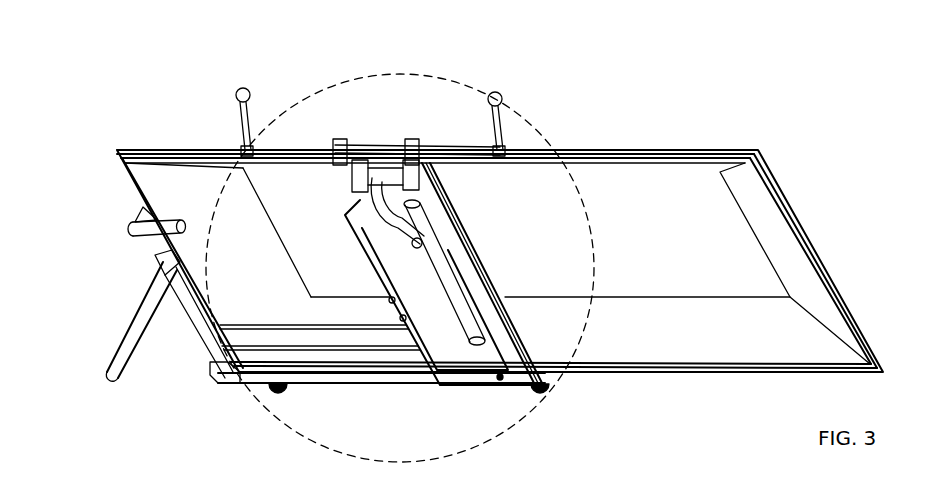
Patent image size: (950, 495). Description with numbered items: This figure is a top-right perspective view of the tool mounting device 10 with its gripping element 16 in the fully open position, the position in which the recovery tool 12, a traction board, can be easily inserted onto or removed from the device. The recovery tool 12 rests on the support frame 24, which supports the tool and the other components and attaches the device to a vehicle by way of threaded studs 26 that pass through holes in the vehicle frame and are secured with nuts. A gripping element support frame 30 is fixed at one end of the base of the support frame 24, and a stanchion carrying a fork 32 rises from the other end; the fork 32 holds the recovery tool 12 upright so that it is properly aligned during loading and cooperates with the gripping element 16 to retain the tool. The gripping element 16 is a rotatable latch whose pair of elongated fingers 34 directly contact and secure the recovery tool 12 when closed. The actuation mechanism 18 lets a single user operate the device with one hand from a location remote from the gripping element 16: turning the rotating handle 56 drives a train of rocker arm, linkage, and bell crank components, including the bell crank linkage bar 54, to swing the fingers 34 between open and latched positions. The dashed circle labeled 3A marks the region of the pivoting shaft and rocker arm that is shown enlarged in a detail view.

The tool mounting device 10 is at (744, 126).
The recovery tool 12 is at (790, 254).
The gripping element 16 is at (391, 122).
The actuation mechanism 18 is at (486, 250).
The support frame 24 is at (380, 385).
The threaded studs 26 is at (275, 394).
The gripping element support frame 30 is at (515, 344).
The fork 32 is at (135, 233).
The fingers 34 is at (245, 125).
The bell crank linkage bar 54 is at (312, 338).
The rotating handle 56 is at (118, 350).
The detail view region 3A is at (545, 130).